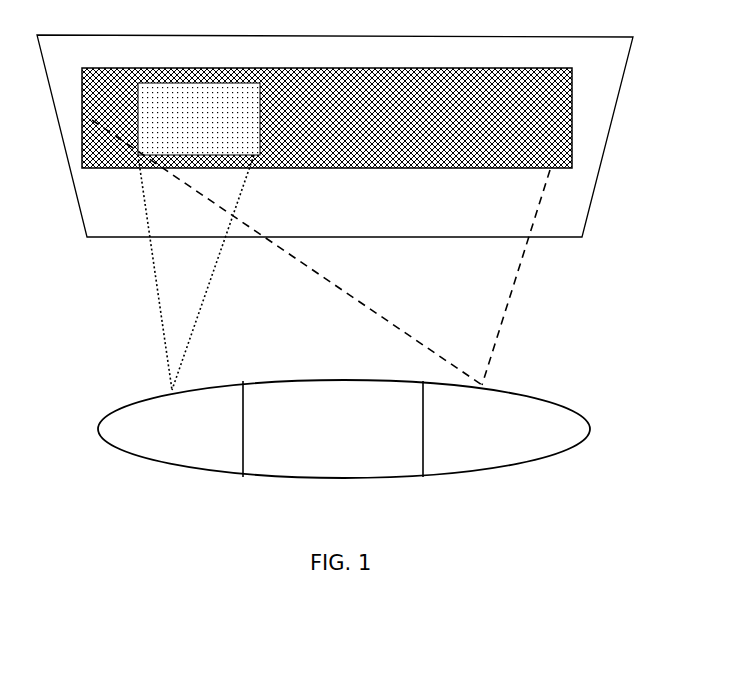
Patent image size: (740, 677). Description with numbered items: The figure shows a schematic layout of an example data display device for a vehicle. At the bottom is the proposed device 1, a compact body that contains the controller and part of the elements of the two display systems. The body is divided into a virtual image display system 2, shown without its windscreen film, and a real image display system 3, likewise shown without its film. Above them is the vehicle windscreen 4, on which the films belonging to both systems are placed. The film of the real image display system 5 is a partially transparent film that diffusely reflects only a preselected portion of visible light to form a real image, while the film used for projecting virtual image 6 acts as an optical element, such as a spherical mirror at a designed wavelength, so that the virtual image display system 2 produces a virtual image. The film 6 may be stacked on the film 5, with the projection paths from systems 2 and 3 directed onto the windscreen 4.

The proposed device 1 is at (342, 439).
The virtual image display system 2 is at (216, 429).
The real image display system 3 is at (462, 429).
The vehicle windscreen 4 is at (351, 129).
The film of the real image display system 5 is at (327, 226).
The film used for projecting virtual image 6 is at (199, 236).